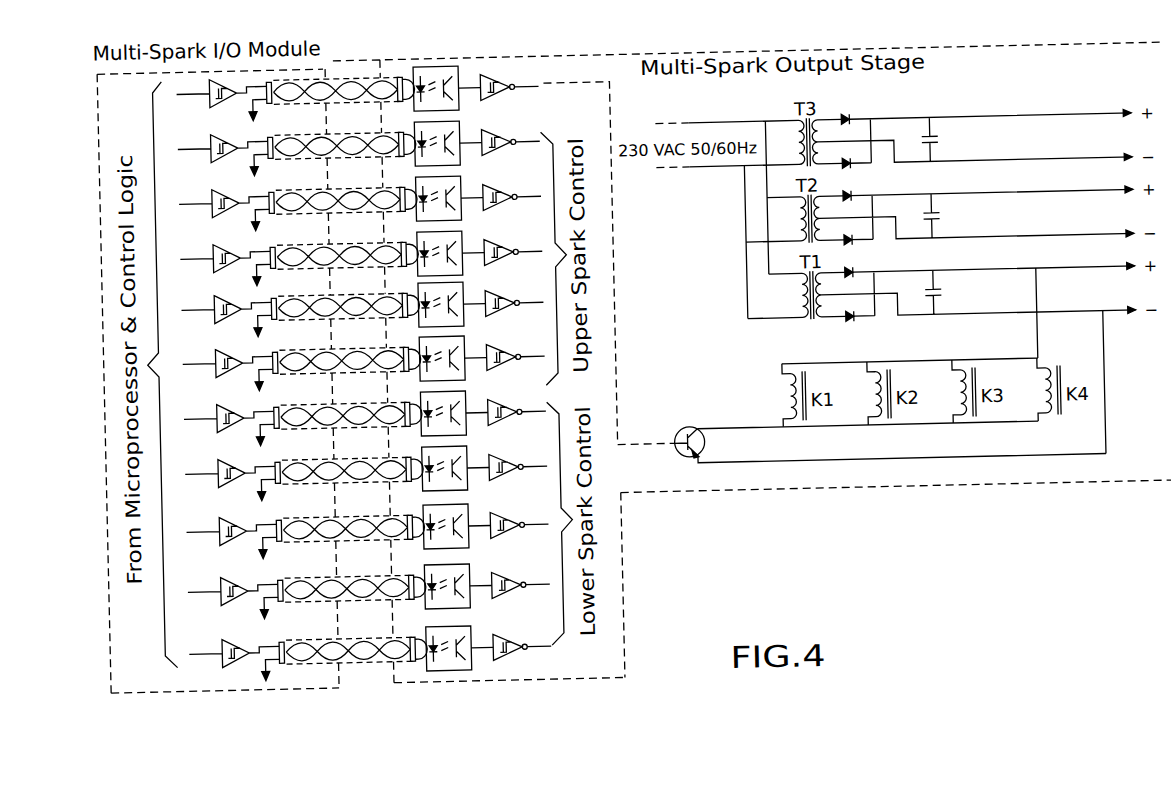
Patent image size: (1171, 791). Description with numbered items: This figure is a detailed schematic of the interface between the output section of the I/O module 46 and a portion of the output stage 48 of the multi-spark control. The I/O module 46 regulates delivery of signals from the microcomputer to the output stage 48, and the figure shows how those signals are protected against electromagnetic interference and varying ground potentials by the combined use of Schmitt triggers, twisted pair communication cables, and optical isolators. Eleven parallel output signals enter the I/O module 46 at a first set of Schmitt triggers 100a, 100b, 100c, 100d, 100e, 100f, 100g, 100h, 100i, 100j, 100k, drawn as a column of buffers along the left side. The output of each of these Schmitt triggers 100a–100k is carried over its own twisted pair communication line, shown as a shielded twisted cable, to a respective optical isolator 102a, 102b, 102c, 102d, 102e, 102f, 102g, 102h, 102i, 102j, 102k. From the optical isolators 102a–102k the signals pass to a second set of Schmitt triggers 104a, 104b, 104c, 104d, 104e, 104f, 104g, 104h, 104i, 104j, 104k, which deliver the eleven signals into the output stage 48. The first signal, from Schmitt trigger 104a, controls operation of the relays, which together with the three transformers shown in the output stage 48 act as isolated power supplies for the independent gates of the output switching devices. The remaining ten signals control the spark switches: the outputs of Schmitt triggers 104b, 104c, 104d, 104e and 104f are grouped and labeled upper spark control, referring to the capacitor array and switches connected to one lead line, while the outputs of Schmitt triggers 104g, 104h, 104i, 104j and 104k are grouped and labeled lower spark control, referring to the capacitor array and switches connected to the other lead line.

The I/O module 46 is at (331, 71).
The output stage 48 is at (1002, 61).
The Schmitt trigger 100a is at (214, 103).
The Schmitt trigger 100b is at (216, 158).
The Schmitt trigger 100c is at (217, 213).
The Schmitt trigger 100d is at (218, 268).
The Schmitt trigger 100e is at (219, 319).
The Schmitt trigger 100f is at (220, 373).
The Schmitt trigger 100g is at (222, 428).
The Schmitt trigger 100h is at (223, 483).
The Schmitt trigger 100i is at (224, 541).
The Schmitt trigger 100j is at (226, 601).
The Schmitt trigger 100k is at (227, 663).
The optical isolator 102a is at (457, 94).
The optical isolator 102b is at (459, 149).
The optical isolator 102c is at (460, 204).
The optical isolator 102d is at (462, 259).
The optical isolator 102e is at (462, 310).
The optical isolator 102f is at (462, 364).
The optical isolator 102g is at (465, 419).
The optical isolator 102h is at (467, 474).
The optical isolator 102i is at (464, 532).
The optical isolator 102j is at (465, 592).
The optical isolator 102k is at (470, 654).
The Schmitt trigger 104a is at (523, 79).
The Schmitt trigger 104b is at (525, 135).
The Schmitt trigger 104c is at (526, 190).
The Schmitt trigger 104d is at (528, 245).
The Schmitt trigger 104e is at (529, 296).
The Schmitt trigger 104f is at (528, 350).
The Schmitt trigger 104g is at (531, 405).
The Schmitt trigger 104h is at (533, 460).
The Schmitt trigger 104i is at (531, 518).
The Schmitt trigger 104j is at (532, 578).
The Schmitt trigger 104k is at (537, 639).